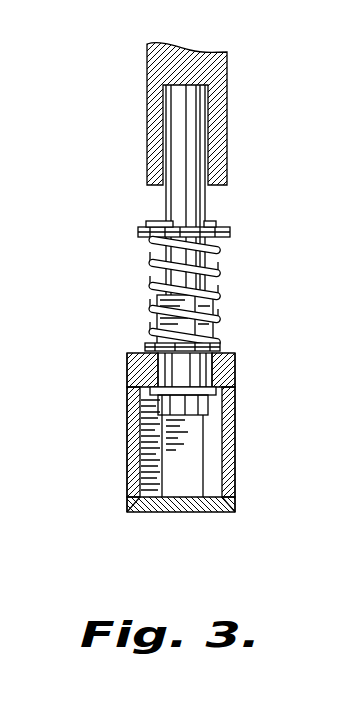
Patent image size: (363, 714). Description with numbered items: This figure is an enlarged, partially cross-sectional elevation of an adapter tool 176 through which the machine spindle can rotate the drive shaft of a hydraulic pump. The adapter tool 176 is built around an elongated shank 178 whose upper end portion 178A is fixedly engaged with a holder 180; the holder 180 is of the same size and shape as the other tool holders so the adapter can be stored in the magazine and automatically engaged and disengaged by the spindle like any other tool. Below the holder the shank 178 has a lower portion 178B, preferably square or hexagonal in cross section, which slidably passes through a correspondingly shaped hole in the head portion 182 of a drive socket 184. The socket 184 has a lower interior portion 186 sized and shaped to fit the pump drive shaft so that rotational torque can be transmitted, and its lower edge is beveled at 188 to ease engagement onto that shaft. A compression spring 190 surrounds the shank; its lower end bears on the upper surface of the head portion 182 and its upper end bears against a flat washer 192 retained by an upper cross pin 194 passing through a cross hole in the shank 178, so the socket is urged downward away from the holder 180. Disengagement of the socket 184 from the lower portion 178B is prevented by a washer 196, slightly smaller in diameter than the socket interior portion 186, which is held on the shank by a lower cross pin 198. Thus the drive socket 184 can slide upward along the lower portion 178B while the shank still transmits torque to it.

The adapter tool 176 is at (220, 197).
The elongated shank 178 is at (214, 258).
The upper end portion 178A is at (227, 99).
The lower portion 178B is at (156, 337).
The holder 180 is at (227, 72).
The head portion 182 is at (127, 357).
The drive socket 184 is at (112, 471).
The lower interior portion 186 is at (196, 455).
The beveled lower edge portion 188 is at (130, 513).
The compression spring 190 is at (215, 298).
The flat washer 192 is at (230, 232).
The upper cross pin 194 is at (215, 222).
The washer 196 is at (150, 386).
The lower cross pin 198 is at (130, 411).